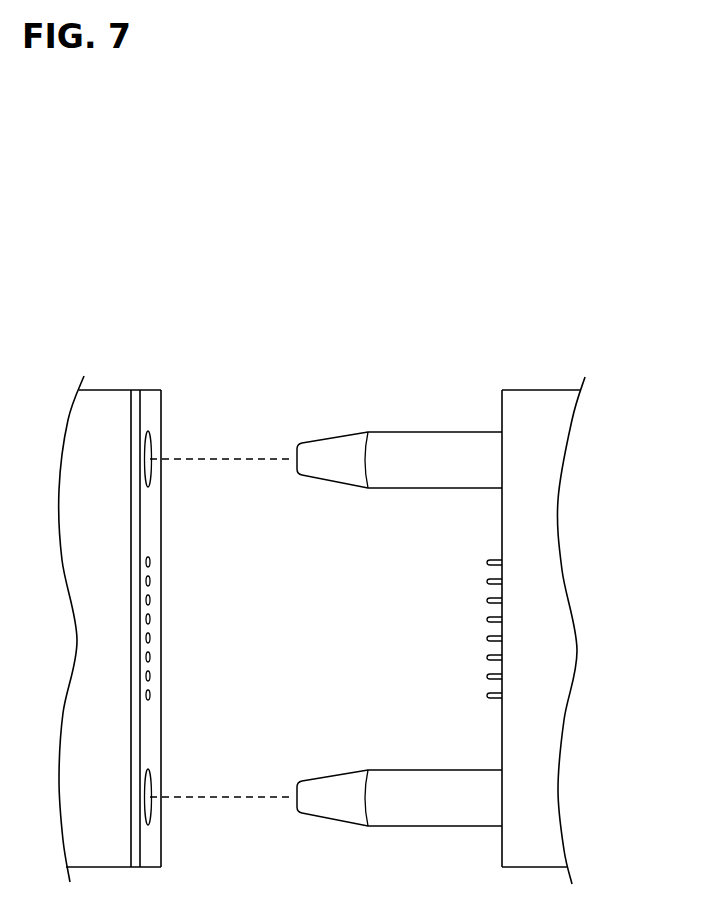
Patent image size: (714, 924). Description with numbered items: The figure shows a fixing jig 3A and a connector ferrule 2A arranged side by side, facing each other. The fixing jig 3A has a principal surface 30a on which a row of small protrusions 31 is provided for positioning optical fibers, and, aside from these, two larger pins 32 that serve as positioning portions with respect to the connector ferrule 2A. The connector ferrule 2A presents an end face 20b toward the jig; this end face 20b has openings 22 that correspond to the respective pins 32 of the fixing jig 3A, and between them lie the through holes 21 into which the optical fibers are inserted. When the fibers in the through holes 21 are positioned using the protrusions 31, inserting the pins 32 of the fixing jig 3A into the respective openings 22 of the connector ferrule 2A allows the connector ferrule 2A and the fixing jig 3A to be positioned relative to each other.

The connector ferrule 2A is at (113, 350).
The end face 20b is at (152, 403).
The openings 22 is at (152, 444).
The through holes 21 is at (147, 675).
The fixing jig 3A is at (536, 350).
The principal surface 30a is at (500, 410).
The pins 32 is at (415, 431).
The protrusions 31 is at (492, 558).